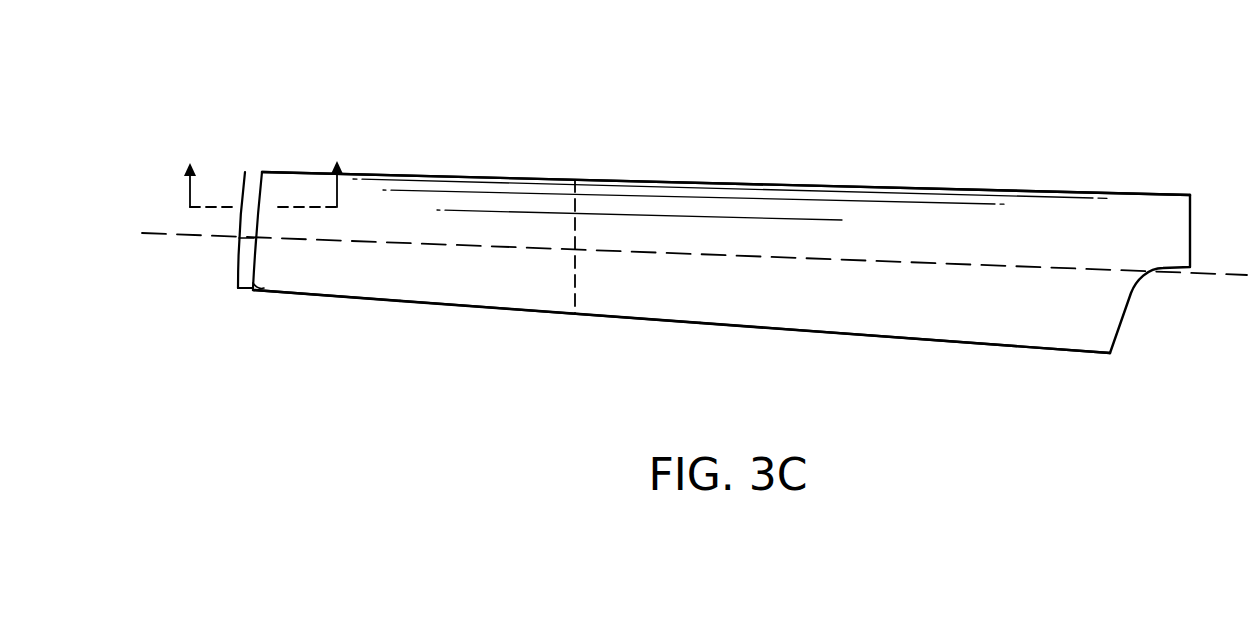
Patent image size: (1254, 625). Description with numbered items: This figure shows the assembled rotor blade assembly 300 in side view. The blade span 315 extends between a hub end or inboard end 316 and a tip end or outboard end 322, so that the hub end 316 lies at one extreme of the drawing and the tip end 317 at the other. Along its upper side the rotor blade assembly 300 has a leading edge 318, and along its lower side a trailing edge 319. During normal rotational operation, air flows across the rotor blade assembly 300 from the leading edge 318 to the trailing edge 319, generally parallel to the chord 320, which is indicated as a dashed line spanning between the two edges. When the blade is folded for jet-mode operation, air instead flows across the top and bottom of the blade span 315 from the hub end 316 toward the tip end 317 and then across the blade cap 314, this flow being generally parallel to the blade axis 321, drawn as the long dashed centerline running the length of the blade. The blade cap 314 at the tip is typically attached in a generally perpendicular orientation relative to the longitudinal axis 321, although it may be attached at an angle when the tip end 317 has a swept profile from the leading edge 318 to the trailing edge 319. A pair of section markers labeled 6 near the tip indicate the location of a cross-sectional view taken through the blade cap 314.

The rotor blade assembly 300 is at (221, 75).
The blade cap 314 is at (248, 266).
The blade span 315 is at (868, 331).
The hub end 316 is at (1145, 208).
The tip end 317 is at (283, 293).
The leading edge 318 is at (736, 183).
The trailing edge 319 is at (462, 305).
The chord 320 is at (575, 292).
The blade axis 321 is at (998, 265).
The outboard end 322 is at (263, 284).
The section line 6- 6 is at (263, 168).